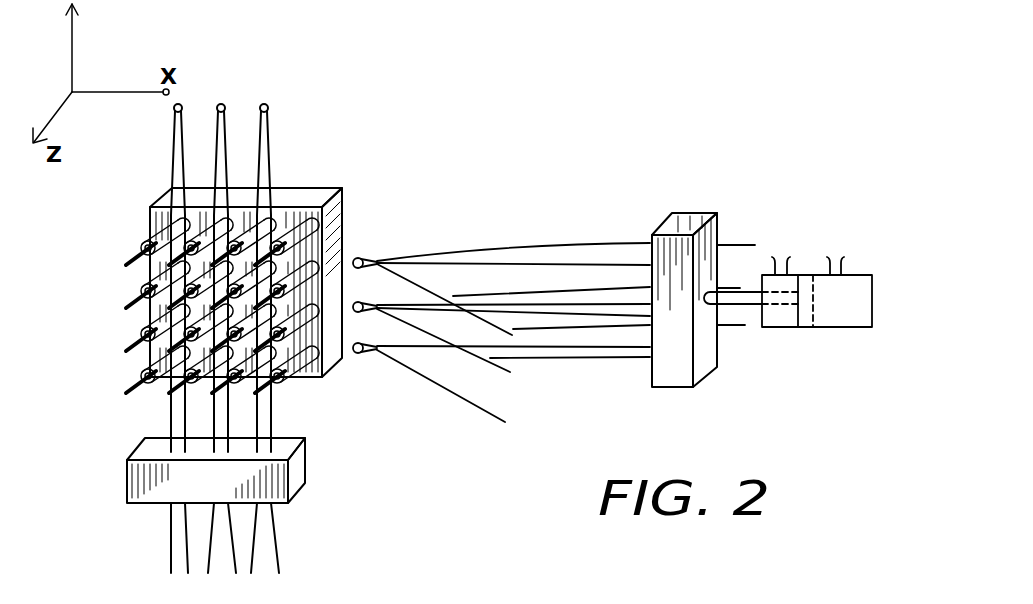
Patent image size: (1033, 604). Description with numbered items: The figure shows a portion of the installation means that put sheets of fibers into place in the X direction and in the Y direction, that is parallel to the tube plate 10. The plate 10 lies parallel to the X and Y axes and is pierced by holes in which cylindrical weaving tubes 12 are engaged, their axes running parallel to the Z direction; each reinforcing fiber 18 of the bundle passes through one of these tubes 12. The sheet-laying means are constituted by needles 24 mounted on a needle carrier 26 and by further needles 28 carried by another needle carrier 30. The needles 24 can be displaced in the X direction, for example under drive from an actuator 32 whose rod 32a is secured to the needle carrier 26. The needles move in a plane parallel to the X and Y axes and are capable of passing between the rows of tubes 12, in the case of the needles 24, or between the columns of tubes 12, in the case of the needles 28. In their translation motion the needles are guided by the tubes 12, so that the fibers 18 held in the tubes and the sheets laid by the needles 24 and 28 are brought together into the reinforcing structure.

The plate 10 is at (318, 197).
The weaving tube 12 is at (146, 242).
The reinforcing fiber 18 is at (133, 265).
The needle 24 is at (557, 267).
The needle carrier 26 is at (690, 212).
The needle 28 is at (171, 428).
The needle carrier 30 is at (292, 472).
The actuator 32 is at (840, 322).
The rod 32a is at (746, 306).